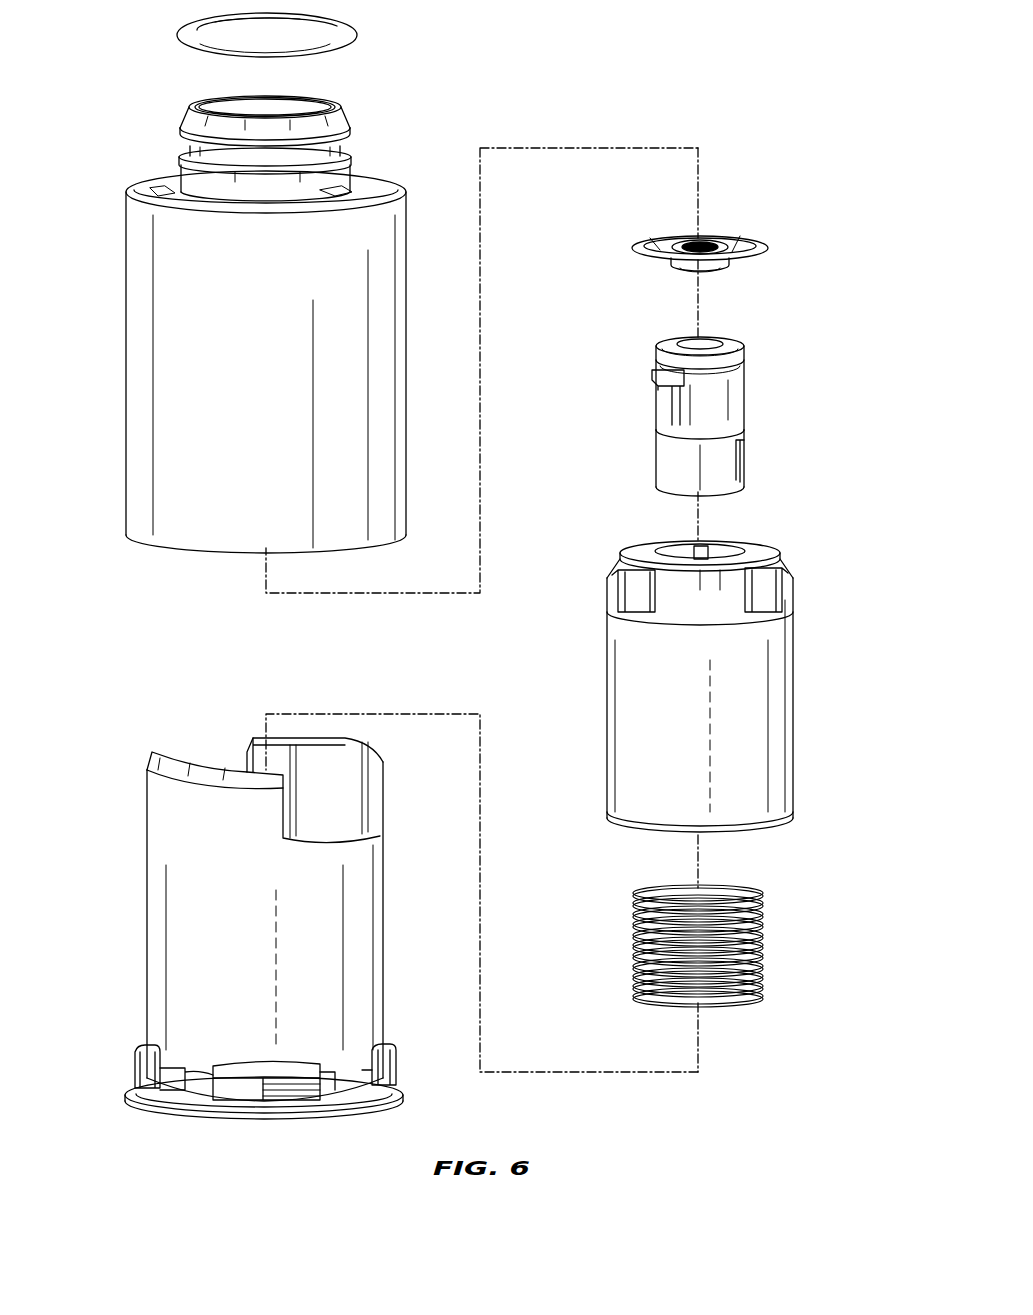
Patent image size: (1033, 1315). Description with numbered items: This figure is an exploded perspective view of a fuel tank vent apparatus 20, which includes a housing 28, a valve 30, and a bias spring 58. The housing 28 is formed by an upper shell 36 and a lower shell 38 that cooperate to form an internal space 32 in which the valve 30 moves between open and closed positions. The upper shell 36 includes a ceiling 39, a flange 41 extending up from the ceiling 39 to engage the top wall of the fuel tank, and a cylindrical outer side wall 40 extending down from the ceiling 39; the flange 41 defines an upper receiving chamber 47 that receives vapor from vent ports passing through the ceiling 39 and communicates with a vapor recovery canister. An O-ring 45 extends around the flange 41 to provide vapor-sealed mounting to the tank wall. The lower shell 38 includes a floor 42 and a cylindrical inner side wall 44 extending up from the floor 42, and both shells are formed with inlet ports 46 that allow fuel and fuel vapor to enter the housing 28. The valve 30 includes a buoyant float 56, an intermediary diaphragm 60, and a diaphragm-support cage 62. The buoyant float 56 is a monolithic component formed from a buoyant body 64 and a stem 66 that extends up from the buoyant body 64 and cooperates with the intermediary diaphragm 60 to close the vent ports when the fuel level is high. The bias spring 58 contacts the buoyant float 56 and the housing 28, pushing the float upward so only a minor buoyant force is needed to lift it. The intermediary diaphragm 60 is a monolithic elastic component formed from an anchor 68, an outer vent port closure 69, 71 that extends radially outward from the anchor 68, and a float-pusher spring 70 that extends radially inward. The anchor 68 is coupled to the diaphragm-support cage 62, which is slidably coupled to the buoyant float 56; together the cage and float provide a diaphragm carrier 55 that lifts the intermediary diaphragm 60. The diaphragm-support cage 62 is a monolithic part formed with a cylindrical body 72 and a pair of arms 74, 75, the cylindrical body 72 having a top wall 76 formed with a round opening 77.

The fuel tank vent apparatus 20 is at (735, 72).
The housing 28 is at (58, 576).
The valve 30 is at (838, 487).
The internal space 32 is at (226, 748).
The upper shell 36 is at (124, 348).
The lower shell 38 is at (140, 981).
The ceiling 39 is at (375, 186).
The cylindrical outer side wall 40 is at (388, 238).
The flange 41 is at (338, 112).
The floor 42 is at (246, 1118).
The cylindrical inner side wall 44 is at (362, 920).
The O-ring 45 is at (180, 33).
The inlet ports 46 is at (180, 1104).
The upper receiving chamber 47 is at (300, 98).
The diaphragm carrier 55 is at (712, 509).
The buoyant float 56 is at (722, 508).
The bias spring 58 is at (765, 930).
The intermediary diaphragm 60 is at (790, 490).
The diaphragm-support cage 62 is at (722, 500).
The buoyant body 64 is at (616, 677).
The stem 66 is at (690, 540).
The anchor 68 is at (670, 258).
The outer vent port closure 69 is at (634, 240).
The float-pusher spring 70 is at (720, 242).
The outer vent port closure 71 is at (694, 245).
The cylindrical body 72 is at (655, 448).
The arm 74 is at (652, 388).
The arm 75 is at (750, 360).
The top wall 76 is at (660, 333).
The round opening 77 is at (708, 342).